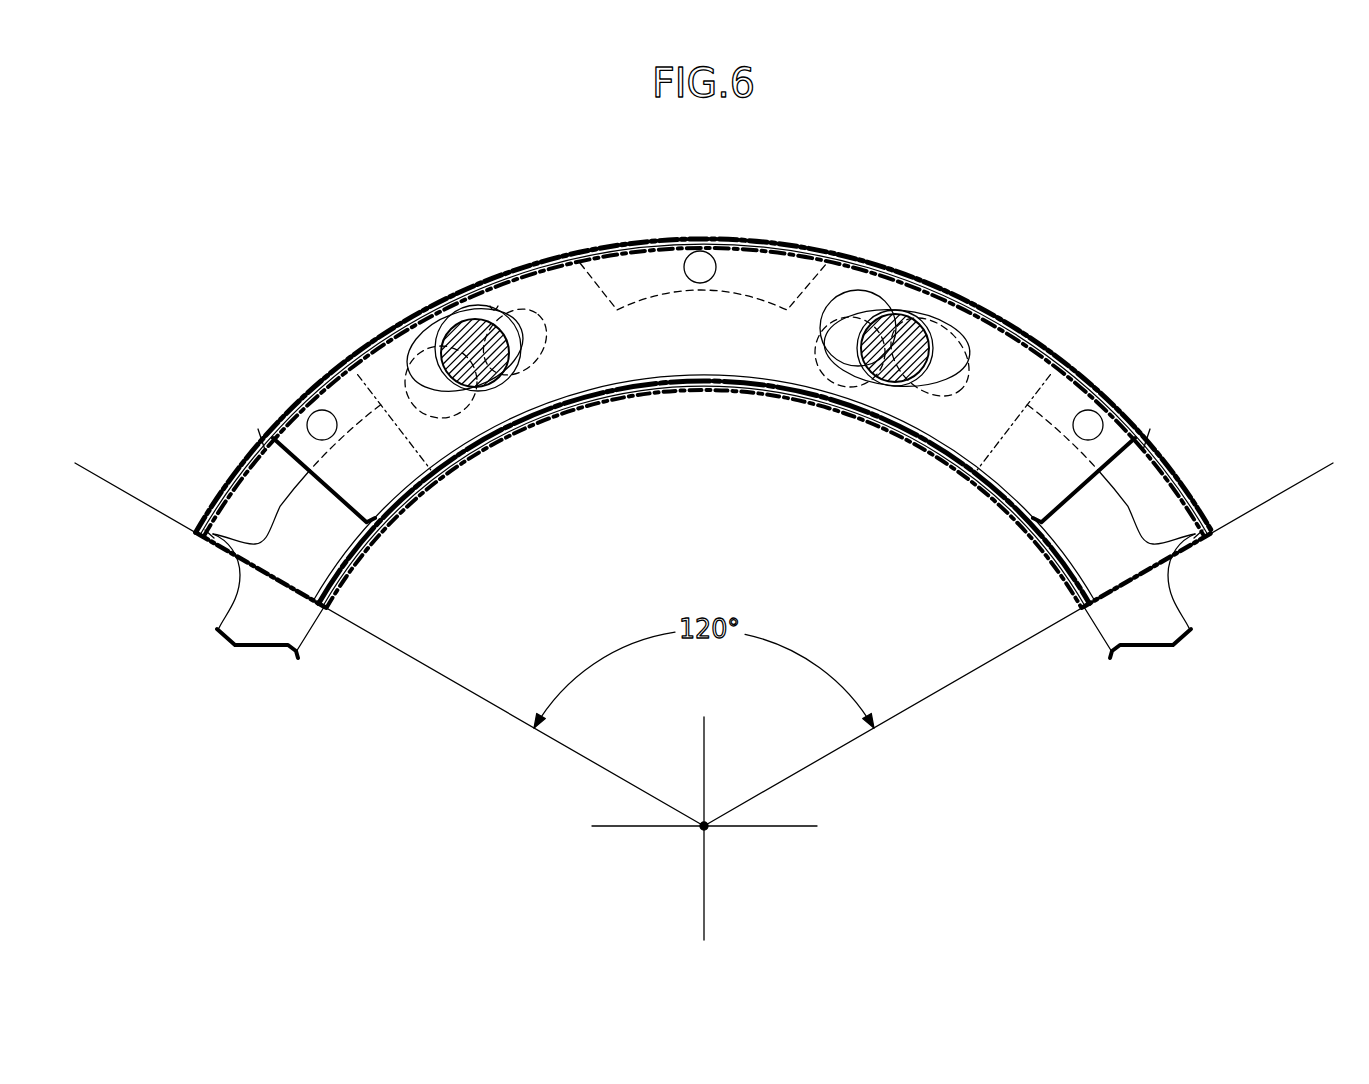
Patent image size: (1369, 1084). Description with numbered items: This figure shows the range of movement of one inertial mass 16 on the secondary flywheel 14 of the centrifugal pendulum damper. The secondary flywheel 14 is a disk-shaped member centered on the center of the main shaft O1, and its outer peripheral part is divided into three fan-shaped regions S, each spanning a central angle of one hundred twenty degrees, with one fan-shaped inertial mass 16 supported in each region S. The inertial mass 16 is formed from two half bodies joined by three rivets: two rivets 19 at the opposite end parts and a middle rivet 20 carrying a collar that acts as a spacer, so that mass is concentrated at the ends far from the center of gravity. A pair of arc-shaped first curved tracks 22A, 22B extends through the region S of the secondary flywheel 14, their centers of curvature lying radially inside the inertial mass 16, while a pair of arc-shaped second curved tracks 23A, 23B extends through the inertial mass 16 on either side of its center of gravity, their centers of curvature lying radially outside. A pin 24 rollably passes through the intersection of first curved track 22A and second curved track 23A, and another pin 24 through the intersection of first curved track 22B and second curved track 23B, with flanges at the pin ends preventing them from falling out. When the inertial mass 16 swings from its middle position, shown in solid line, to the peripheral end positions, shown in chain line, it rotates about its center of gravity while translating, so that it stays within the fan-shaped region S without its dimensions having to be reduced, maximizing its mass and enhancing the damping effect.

The secondary flywheel 14 is at (1190, 589).
The inertial mass 16 is at (748, 237).
The rivet 19 is at (323, 426).
The middle rivet 20 is at (701, 265).
The first curved track 22A is at (523, 375).
The first curved track 22B is at (935, 400).
The second curved track 23A is at (497, 307).
The second curved track 23B is at (957, 338).
The pin 24 is at (487, 366).
The region S is at (652, 393).
The center of the main shaft O1 is at (703, 827).